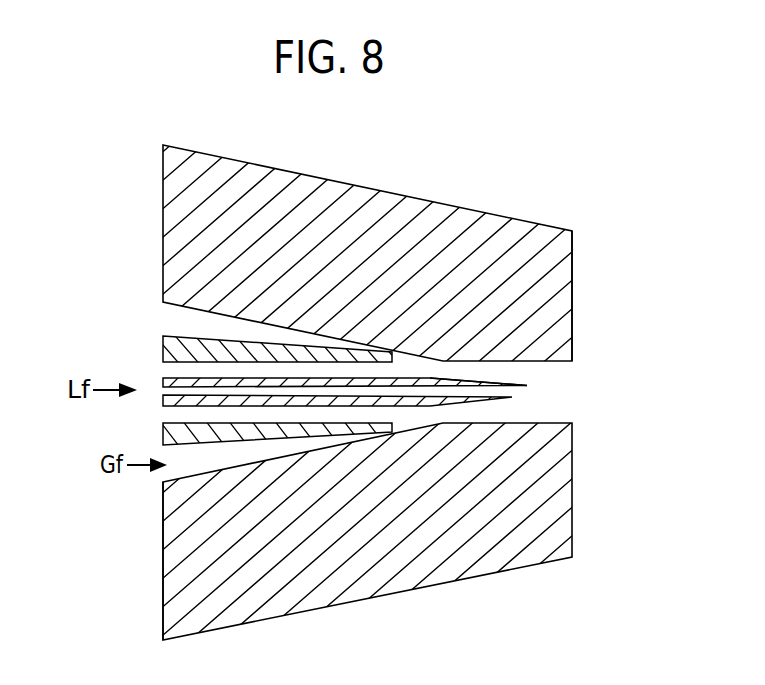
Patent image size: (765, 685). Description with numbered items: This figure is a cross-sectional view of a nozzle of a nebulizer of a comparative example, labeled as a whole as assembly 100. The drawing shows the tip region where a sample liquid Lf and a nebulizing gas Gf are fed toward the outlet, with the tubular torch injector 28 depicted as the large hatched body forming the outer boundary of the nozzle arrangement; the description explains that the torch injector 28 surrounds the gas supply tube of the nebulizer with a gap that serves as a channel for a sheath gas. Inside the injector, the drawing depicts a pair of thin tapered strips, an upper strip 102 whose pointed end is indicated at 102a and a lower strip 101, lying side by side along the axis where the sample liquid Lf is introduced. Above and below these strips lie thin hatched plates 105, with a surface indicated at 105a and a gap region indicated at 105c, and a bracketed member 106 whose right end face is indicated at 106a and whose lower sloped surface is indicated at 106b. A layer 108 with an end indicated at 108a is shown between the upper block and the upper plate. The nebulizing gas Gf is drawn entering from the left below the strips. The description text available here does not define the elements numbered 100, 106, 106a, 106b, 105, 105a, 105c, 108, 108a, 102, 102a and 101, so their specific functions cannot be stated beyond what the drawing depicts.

The light source unit 100 is at (118, 116).
The torch injector 28 is at (350, 342).
The holder 106 is at (163, 289).
The end face of holder 106a is at (572, 330).
The inclined surface of holder 106b is at (205, 474).
The spacer plate 105 is at (163, 345).
The surface of spacer 105a is at (397, 428).
The gap below spacer 105c is at (183, 452).
The adhesive layer 108 is at (175, 320).
The end of adhesive layer 108a is at (396, 355).
The upper optical fiber 102 is at (163, 381).
The tapered end of upper fiber 102a is at (520, 386).
The lower optical fiber 101 is at (163, 396).